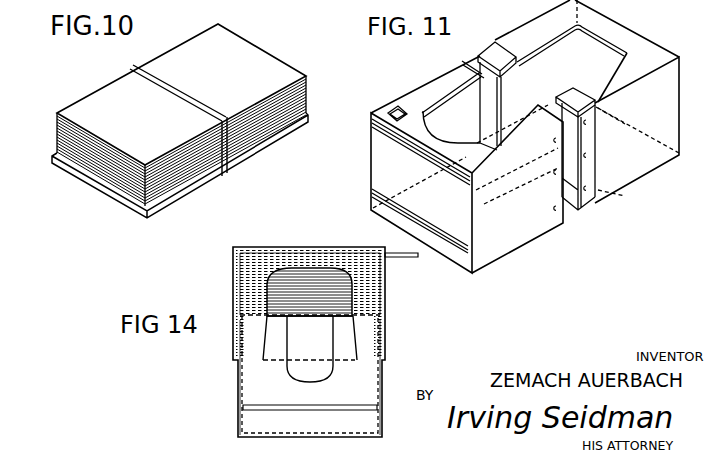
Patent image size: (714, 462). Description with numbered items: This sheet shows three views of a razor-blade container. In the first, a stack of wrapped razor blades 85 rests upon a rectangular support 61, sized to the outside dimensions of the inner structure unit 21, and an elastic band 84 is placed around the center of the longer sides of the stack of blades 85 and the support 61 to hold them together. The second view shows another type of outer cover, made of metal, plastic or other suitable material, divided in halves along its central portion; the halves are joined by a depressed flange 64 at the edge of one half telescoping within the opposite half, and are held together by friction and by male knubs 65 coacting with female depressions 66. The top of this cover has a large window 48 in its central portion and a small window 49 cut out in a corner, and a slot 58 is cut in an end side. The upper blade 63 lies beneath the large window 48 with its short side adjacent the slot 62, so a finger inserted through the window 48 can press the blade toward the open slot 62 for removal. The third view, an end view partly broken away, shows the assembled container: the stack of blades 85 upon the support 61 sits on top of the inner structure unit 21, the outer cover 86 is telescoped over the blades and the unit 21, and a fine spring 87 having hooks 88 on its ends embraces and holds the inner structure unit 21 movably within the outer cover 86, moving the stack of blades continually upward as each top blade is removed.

In FIG. 14, the inner structure unit 21 is at (233, 386).
In FIG. 11, the large window 48 is at (603, 56).
In FIG. 11, the small window 49 is at (393, 107).
In FIG. 11, the slot 58 is at (442, 228).
In FIG. 14, the slot 58 is at (263, 408).
In FIG. 10, the support 61 is at (97, 187).
In FIG. 14, the support 61 is at (307, 315).
In FIG. 11, the slot 62 is at (400, 133).
In FIG. 14, the upper blade 63 is at (399, 256).
In FIG. 11, the depressed flange 64 is at (493, 53).
In FIG. 11, the male knubs 65 is at (596, 157).
In FIG. 11, the female depressions 66 is at (561, 210).
In FIG. 10, the elastic band 84 is at (143, 80).
In FIG. 10, the stack of wrapped razor blades 85 is at (302, 90).
In FIG. 14, the stack of wrapped razor blades 85 is at (358, 303).
In FIG. 14, the outer cover 86 is at (308, 243).
In FIG. 14, the fine spring 87 is at (232, 347).
In FIG. 14, the hooks 88 is at (237, 257).